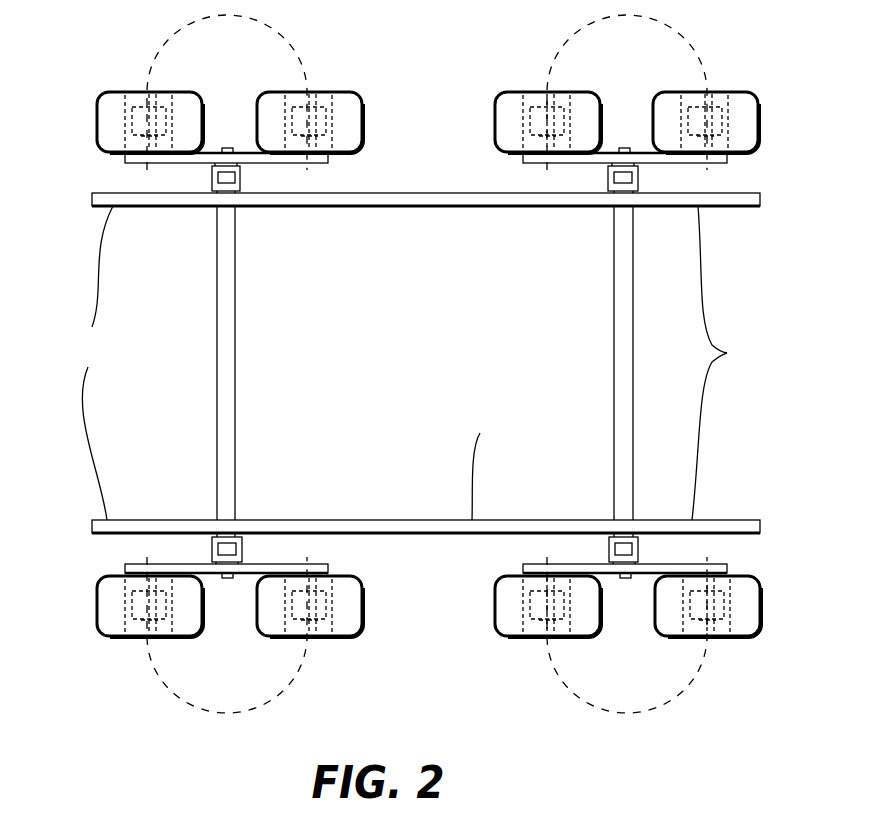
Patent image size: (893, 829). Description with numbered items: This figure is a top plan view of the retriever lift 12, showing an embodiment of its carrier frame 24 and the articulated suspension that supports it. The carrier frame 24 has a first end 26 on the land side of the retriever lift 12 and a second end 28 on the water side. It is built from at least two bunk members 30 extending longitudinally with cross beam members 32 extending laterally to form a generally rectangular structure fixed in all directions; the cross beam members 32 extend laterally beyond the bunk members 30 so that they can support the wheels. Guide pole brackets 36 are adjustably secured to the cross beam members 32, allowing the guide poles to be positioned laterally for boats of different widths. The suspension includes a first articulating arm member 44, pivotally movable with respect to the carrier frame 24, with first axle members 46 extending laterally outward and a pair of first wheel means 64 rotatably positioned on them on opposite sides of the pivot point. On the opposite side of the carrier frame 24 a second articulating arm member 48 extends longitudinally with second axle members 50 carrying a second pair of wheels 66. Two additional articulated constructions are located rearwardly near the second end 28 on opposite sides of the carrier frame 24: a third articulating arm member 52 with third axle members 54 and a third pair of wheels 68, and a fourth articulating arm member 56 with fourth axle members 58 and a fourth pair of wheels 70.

The retriever lift 12 is at (750, 298).
The carrier frame 24 is at (615, 407).
The first end 26 is at (92, 363).
The second end 28 is at (732, 363).
The bunk members 30 is at (420, 195).
The cross beam members 32 is at (233, 373).
The guide pole brackets 36 is at (243, 550).
The first articulating arm member 44 is at (190, 563).
The first axle members 46 is at (227, 643).
The second articulating arm member 48 is at (188, 163).
The second axle members 50 is at (227, 88).
The third articulating arm member 52 is at (580, 563).
The third axle members 54 is at (627, 643).
The fourth articulating arm member 56 is at (580, 163).
The fourth axle members 58 is at (627, 88).
The first wheel means 64 is at (257, 606).
The second pair of wheels 66 is at (257, 120).
The third pair of wheels 68 is at (655, 606).
The fourth pair of wheels 70 is at (653, 120).